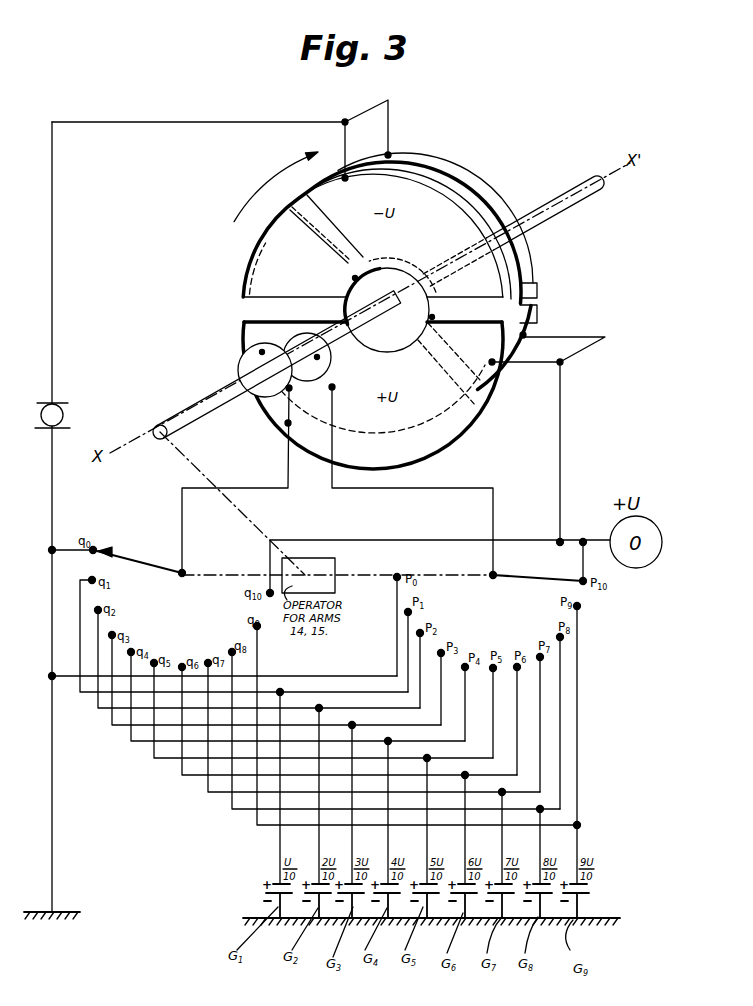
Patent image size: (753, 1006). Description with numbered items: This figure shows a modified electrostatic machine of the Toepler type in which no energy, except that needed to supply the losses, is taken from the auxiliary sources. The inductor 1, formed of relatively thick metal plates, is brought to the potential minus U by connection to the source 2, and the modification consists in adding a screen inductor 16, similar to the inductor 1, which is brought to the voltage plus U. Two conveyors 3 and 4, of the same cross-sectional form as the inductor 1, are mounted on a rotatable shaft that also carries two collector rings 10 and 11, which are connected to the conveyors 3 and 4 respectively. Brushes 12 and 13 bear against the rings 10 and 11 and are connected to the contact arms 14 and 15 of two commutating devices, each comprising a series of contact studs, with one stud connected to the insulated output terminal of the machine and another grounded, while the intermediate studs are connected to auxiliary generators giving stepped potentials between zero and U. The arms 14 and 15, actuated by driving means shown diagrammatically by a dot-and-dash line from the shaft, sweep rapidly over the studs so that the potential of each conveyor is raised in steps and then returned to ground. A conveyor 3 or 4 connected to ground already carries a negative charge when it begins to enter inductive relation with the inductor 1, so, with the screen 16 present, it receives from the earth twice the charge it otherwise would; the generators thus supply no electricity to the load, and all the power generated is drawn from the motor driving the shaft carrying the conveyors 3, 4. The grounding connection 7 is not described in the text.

The inductor 1 is at (527, 278).
The source 2 is at (70, 413).
The conveyor 3 is at (527, 320).
The conveyor 4 is at (270, 315).
The ground connection 7 is at (48, 916).
The collector ring 10 is at (315, 377).
The collector ring 11 is at (240, 368).
The brush 12 is at (332, 387).
The brush 13 is at (288, 423).
The contact arm 14 is at (524, 578).
The contact arm 15 is at (125, 558).
The screen inductor 16 is at (487, 397).